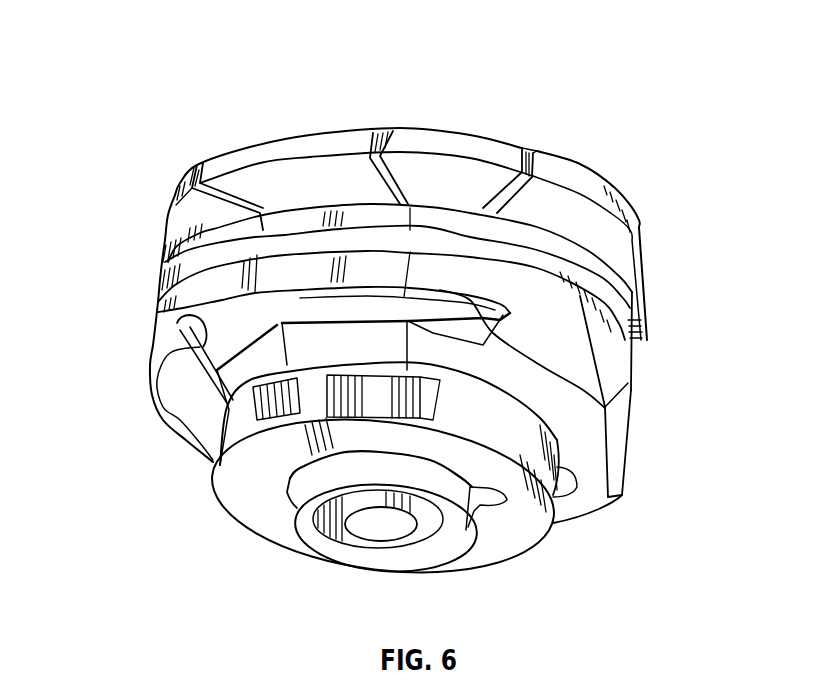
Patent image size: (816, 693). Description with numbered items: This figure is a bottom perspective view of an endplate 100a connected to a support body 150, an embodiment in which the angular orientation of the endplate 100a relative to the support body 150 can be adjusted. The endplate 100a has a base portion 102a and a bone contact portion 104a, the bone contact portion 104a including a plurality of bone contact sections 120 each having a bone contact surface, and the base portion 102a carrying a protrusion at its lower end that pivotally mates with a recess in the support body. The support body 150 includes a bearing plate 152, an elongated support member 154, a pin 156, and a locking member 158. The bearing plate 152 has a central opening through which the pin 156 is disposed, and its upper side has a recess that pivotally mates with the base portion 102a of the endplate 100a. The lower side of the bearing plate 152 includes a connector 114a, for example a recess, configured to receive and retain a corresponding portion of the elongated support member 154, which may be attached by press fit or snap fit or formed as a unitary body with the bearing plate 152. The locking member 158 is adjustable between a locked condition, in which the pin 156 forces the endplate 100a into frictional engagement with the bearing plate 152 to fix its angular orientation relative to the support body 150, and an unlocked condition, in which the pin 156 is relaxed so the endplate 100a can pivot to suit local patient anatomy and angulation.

The endplate 100a is at (152, 75).
The base portion 102a is at (636, 315).
The bone contact portion 104a is at (652, 247).
The connector 114a is at (193, 312).
The bone contact sections 120 is at (360, 130).
The support body 150 is at (541, 546).
The bearing plate 152 is at (633, 451).
The elongated support member 154 is at (237, 433).
The pin 156 is at (371, 528).
The locking member 158 is at (450, 557).